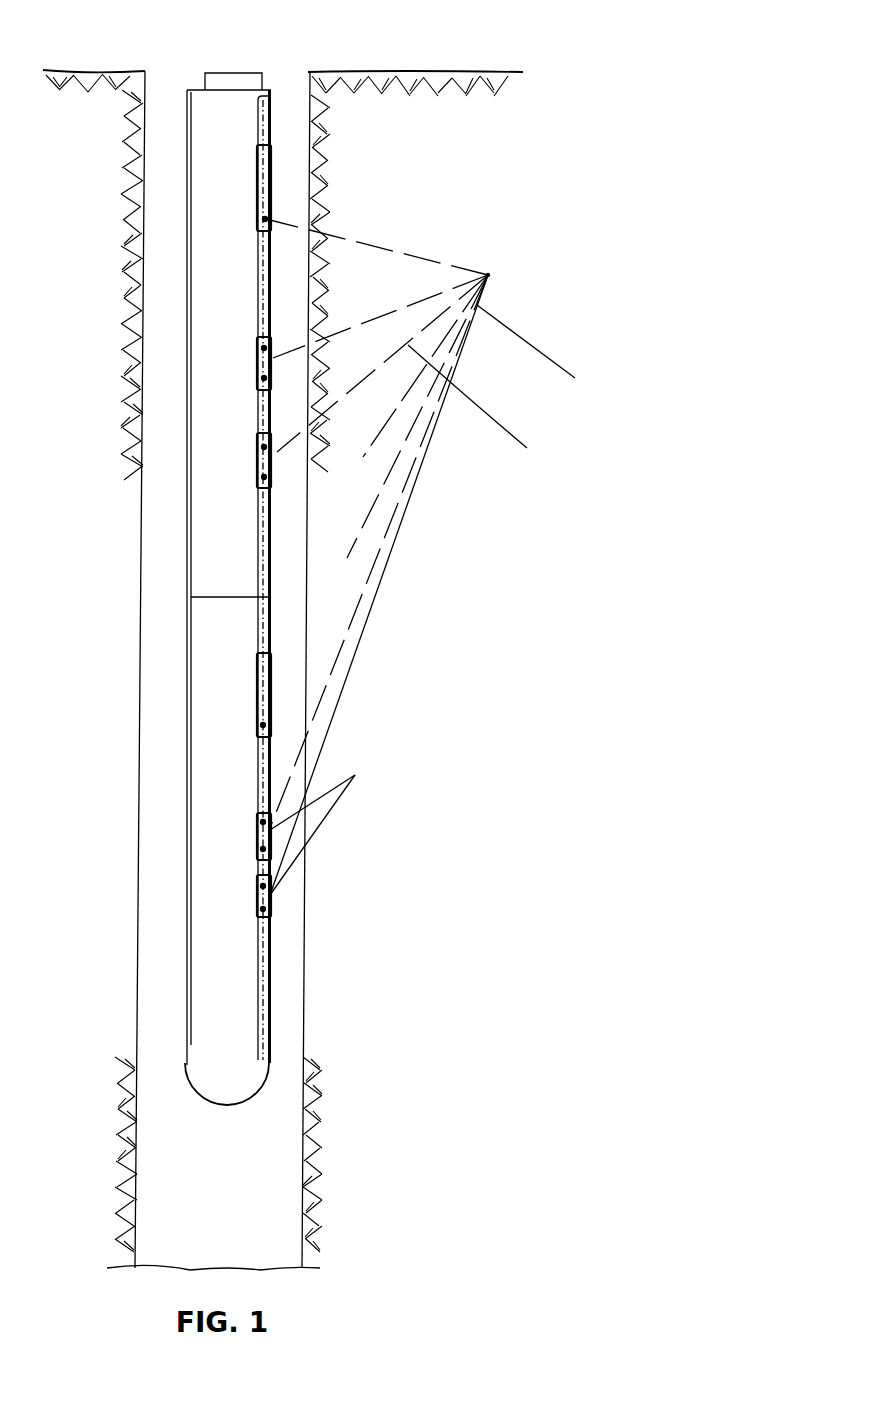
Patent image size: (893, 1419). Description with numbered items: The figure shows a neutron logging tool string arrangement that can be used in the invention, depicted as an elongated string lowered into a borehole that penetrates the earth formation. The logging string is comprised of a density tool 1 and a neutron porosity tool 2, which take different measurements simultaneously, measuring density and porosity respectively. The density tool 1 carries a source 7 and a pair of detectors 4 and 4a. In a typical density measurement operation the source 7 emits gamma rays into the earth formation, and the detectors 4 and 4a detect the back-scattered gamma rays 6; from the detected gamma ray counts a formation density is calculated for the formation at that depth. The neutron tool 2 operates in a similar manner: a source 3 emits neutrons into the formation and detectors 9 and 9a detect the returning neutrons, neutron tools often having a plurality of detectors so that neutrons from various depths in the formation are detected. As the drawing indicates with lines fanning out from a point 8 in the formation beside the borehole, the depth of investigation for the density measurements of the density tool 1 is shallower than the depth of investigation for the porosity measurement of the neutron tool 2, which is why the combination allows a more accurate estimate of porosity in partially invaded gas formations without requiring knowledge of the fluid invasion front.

The density tool 1 is at (272, 630).
The neutron porosity tool 2 is at (272, 537).
The source 3 is at (273, 180).
The detector 4 is at (270, 843).
The detector 4a is at (270, 908).
The back-scattered gamma rays 6 is at (330, 807).
The source 7 is at (263, 725).
The ground surface reference point 8 is at (398, 72).
The detector 9 is at (539, 351).
The detector 9a is at (487, 410).